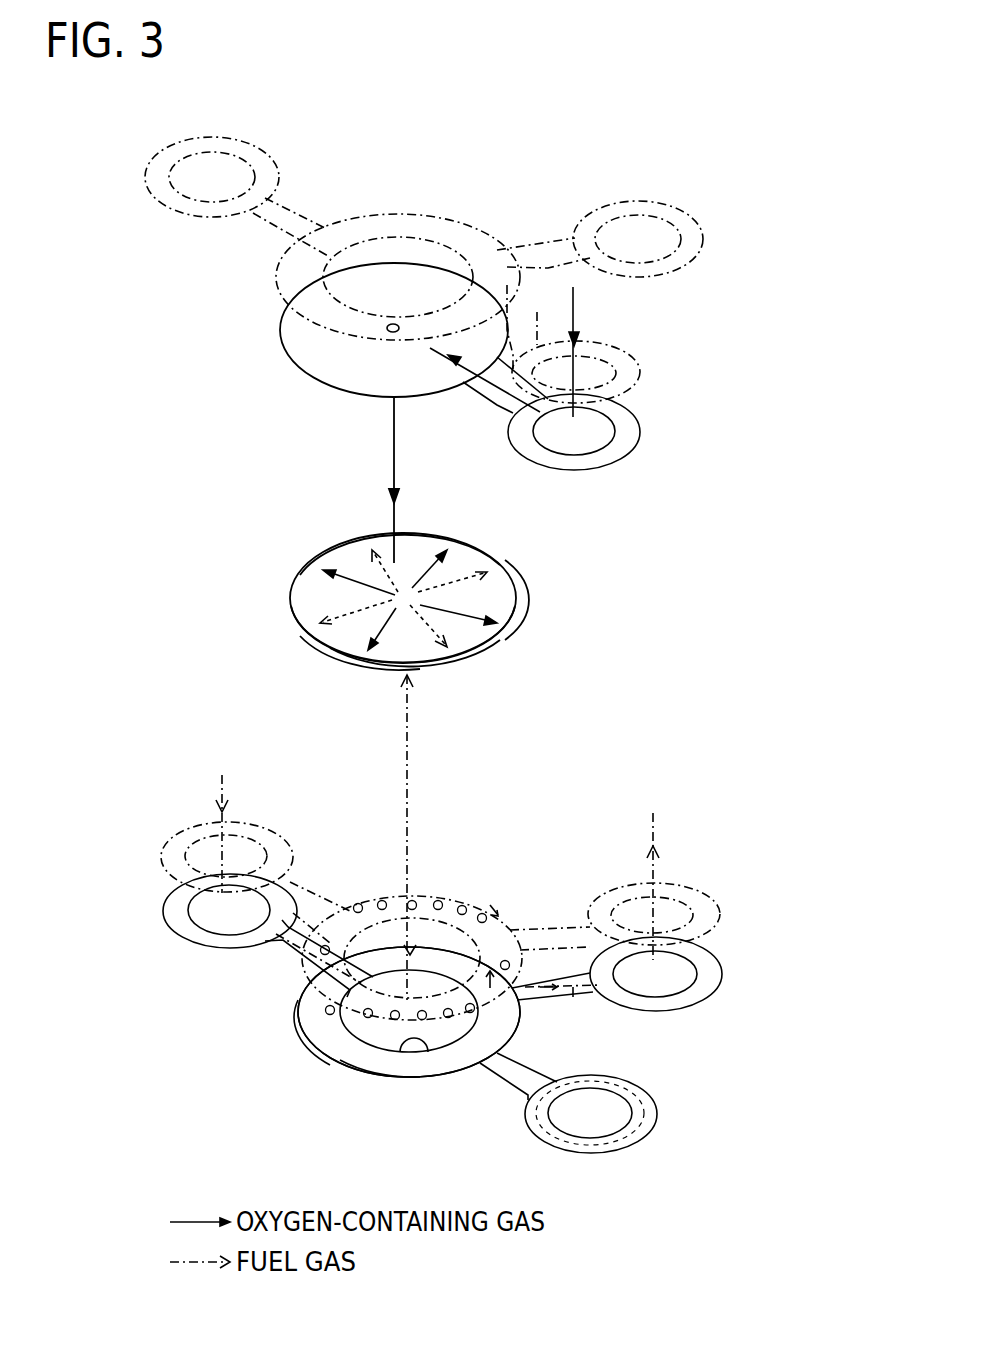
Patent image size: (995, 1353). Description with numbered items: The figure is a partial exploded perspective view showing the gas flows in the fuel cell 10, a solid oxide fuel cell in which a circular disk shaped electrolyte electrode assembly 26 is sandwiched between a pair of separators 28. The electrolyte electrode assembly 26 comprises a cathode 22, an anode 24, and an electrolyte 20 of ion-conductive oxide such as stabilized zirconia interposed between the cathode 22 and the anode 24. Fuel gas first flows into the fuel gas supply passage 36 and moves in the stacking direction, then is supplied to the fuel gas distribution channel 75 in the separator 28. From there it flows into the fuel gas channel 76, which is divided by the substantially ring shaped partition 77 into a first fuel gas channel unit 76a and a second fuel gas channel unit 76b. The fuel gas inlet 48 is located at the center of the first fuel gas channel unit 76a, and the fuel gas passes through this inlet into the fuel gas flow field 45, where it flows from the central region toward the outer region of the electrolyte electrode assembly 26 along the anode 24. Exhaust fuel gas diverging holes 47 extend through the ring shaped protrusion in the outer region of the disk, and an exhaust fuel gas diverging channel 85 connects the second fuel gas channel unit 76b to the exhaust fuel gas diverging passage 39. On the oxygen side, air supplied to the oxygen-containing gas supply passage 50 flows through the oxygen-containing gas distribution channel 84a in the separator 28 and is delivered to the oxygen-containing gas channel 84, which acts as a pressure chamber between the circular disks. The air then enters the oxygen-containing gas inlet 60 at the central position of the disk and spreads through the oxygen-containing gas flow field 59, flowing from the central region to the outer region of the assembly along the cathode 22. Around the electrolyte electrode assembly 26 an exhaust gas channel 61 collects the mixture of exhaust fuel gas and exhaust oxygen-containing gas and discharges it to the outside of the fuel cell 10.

The fuel cell 10 is at (303, 113).
The electrolyte 20 is at (293, 598).
The cathode 22 is at (307, 578).
The anode 24 is at (292, 632).
The electrolyte electrode assembly 26 is at (482, 665).
The separator 28 is at (457, 200).
The fuel gas supply passage 36 is at (195, 913).
The exhaust fuel gas diverging passage 39 is at (657, 221).
The fuel gas flow field 45 is at (440, 672).
The exhaust fuel gas diverging holes 47 is at (437, 898).
The fuel gas inlet 48 is at (362, 902).
The oxygen-containing gas supply passage 50 is at (557, 442).
The oxygen-containing gas flow field 59 is at (420, 587).
The oxygen-containing gas inlet 60 is at (395, 322).
The exhaust gas channel 61 is at (530, 602).
The fuel gas distribution channel 75 is at (268, 957).
The fuel gas channel 76 is at (240, 1012).
The first fuel gas channel unit 76a is at (300, 1023).
The second fuel gas channel unit 76b is at (343, 1045).
The partition 77 is at (432, 1057).
The oxygen-containing gas channel 84 is at (402, 320).
The oxygen-containing gas distribution channel 84a is at (488, 402).
The exhaust fuel gas diverging channel 85 is at (575, 1007).